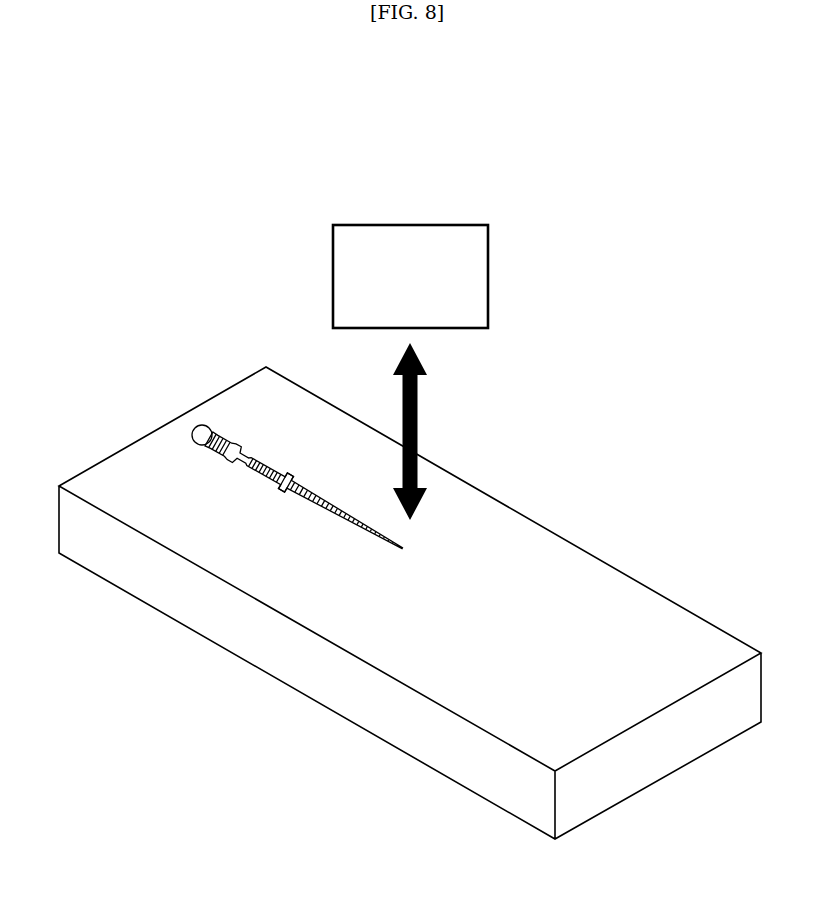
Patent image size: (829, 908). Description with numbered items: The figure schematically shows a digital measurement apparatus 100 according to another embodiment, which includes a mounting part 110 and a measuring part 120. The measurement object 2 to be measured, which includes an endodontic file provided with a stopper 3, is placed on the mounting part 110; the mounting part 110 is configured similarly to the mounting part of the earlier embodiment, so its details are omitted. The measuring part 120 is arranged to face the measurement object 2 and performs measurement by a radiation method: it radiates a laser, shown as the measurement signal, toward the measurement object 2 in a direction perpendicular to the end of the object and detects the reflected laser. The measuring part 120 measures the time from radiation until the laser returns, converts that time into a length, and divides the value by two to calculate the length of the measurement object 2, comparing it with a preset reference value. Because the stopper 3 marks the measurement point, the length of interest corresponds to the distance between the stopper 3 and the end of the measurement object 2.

The digital measurement apparatus 100 is at (434, 150).
The mounting part 110 is at (624, 570).
The measuring part 120 is at (489, 276).
The measurement object 2 is at (328, 493).
The stopper 3 is at (288, 470).